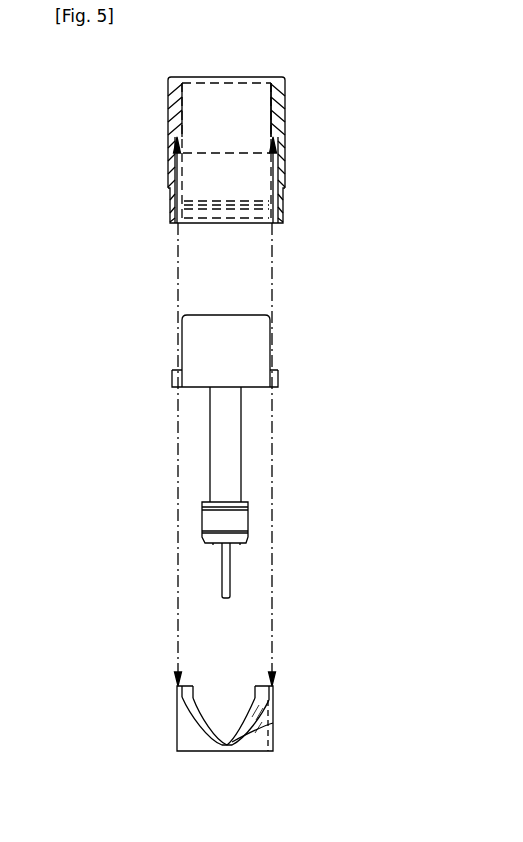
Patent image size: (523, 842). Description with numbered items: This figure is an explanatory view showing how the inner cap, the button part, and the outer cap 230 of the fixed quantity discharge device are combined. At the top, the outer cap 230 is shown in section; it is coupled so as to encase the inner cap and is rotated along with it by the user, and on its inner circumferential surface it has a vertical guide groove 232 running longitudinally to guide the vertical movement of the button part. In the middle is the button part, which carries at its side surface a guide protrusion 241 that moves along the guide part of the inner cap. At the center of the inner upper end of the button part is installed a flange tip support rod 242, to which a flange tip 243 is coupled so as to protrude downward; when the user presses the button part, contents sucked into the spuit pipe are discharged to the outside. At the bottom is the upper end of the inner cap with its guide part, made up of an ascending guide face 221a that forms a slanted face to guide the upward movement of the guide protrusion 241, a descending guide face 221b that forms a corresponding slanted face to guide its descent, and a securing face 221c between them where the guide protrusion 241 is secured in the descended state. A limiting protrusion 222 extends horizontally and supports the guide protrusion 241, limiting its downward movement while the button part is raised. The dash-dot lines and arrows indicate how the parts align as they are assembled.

The ascending guide face 221a is at (197, 722).
The descending guide face 221b is at (257, 701).
The securing face 221c is at (274, 724).
The limiting protrusion 222 is at (182, 698).
The outer cap 230 is at (278, 162).
The vertical guide groove 232 is at (278, 112).
The guide protrusion 241 is at (275, 379).
The flange tip support rod 242 is at (228, 457).
The flange tip 243 is at (237, 522).